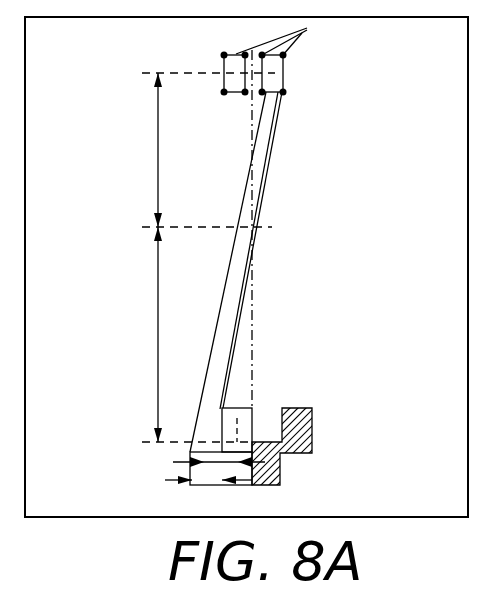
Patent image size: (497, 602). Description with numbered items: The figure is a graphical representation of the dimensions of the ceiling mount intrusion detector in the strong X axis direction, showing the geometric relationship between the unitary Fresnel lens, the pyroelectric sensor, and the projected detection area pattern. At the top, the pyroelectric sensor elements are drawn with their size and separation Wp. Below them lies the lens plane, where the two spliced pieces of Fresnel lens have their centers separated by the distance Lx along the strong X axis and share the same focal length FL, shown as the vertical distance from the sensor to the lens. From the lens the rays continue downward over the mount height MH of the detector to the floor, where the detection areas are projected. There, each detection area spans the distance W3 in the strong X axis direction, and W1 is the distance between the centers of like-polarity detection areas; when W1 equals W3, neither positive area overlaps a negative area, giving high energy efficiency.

The size and distance between elements of the pyroelectric sensor Wp is at (296, 41).
The focal length FL is at (142, 150).
The mount height MH is at (141, 334).
The distance between centers of each piece of lens along the strong X axis Lx is at (224, 230).
The distance between centers of positive (or negative) detection areas in the strong W1 is at (204, 461).
The span of each detection area in the strong X axis direction W3 is at (208, 493).